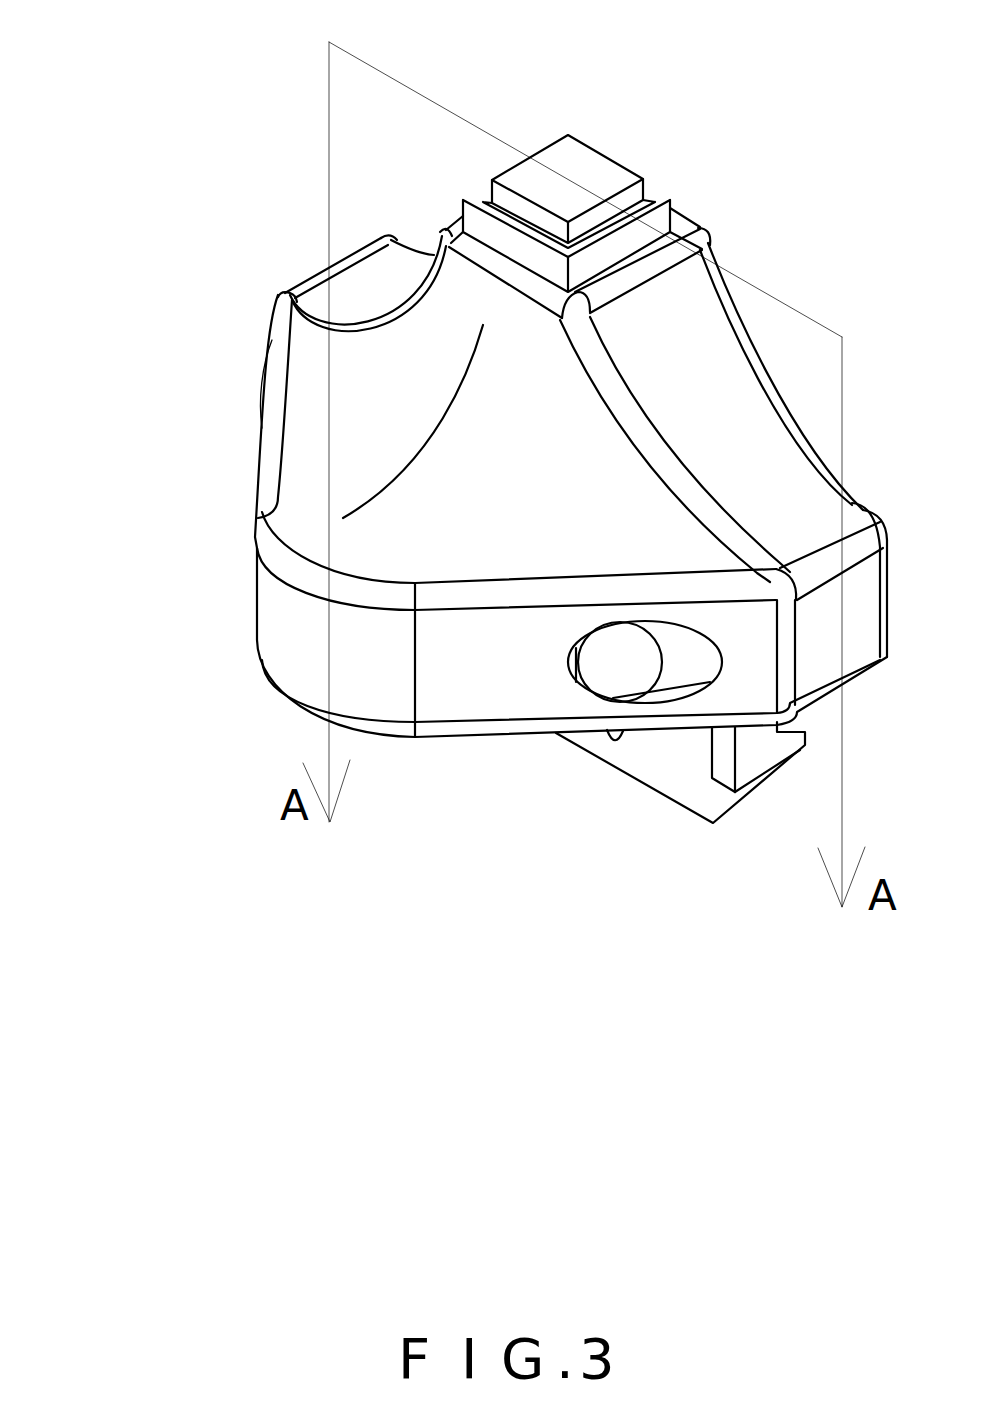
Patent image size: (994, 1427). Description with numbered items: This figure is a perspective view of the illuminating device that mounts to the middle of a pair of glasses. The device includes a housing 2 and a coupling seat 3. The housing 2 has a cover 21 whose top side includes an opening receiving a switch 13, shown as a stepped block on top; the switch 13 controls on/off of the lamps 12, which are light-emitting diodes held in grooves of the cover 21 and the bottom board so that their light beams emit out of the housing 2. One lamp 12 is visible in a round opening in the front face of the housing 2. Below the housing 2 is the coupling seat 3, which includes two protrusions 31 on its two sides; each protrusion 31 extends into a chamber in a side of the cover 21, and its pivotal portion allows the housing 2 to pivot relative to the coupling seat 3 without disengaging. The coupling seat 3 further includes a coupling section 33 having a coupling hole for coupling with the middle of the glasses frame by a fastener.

The housing 2 is at (163, 580).
The switch 13 is at (573, 166).
The cover 21 is at (682, 365).
The lamp 12 is at (623, 685).
The coupling seat 3 is at (658, 850).
The coupling section 33 is at (688, 775).
The protrusion 31 is at (753, 740).